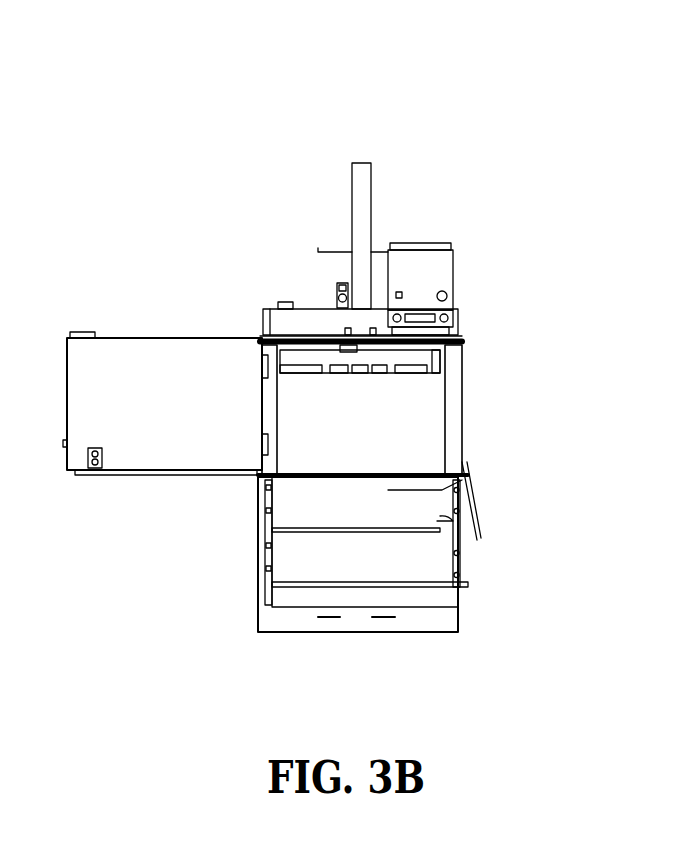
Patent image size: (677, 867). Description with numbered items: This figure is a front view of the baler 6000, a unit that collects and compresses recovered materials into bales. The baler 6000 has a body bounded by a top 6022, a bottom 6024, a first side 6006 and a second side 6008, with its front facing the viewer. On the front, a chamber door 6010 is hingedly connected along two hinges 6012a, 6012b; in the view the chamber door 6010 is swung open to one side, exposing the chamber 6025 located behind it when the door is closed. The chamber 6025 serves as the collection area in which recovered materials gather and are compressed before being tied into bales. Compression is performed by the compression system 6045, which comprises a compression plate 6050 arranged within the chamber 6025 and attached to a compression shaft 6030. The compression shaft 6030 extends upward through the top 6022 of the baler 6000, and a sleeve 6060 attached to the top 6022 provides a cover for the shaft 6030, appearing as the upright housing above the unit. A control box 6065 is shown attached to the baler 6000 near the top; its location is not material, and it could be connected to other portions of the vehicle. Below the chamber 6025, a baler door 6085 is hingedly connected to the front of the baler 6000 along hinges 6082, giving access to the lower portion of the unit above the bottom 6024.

The baler 6000 is at (557, 122).
The first side 6006 is at (260, 558).
The second side 6008 is at (458, 610).
The chamber door 6010 is at (112, 475).
The hinge 6012a is at (262, 370).
The hinge 6012b is at (262, 437).
The top 6022 is at (275, 345).
The bottom 6024 is at (385, 631).
The chamber 6025 is at (440, 447).
The compression shaft 6030 is at (328, 350).
The compression system 6045 is at (468, 313).
The compression plate 6050 is at (428, 358).
The sleeve 6060 is at (373, 200).
The control box 6065 is at (440, 243).
The hinges 6082 is at (265, 516).
The baler door 6085 is at (310, 562).